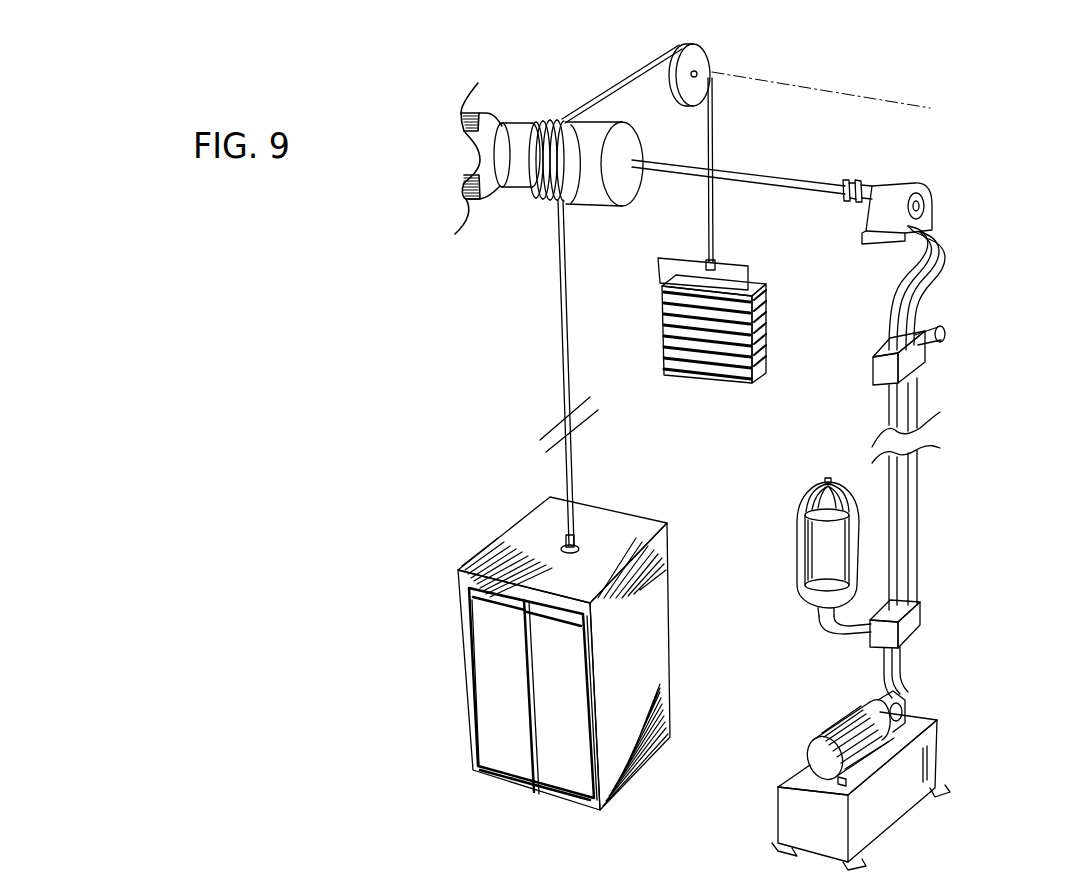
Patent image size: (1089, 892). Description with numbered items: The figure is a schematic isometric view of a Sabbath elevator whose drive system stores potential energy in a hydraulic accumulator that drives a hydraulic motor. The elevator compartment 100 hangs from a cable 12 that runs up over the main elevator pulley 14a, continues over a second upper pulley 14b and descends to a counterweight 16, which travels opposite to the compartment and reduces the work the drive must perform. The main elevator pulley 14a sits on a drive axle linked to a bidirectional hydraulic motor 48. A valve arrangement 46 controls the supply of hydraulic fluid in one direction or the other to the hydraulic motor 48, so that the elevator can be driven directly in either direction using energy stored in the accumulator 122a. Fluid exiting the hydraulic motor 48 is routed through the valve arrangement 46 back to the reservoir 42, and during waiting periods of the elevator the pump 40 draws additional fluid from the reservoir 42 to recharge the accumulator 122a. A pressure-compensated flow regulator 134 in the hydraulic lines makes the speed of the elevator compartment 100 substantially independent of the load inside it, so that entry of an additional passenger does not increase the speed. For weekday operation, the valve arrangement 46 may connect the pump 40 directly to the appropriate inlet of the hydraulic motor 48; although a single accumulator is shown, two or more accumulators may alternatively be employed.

The cable 12 is at (565, 400).
The main elevator pulley 14a is at (534, 122).
The upper pulley 14b is at (692, 58).
The counterweight 16 is at (775, 320).
The pump 40 is at (908, 732).
The reservoir 42 is at (905, 790).
The valve arrangement 46 is at (908, 632).
The hydraulic motor 48 is at (926, 224).
The elevator compartment 100 is at (470, 665).
The accumulator 122a is at (815, 548).
The pressure-compensated flow regulator 134 is at (915, 360).